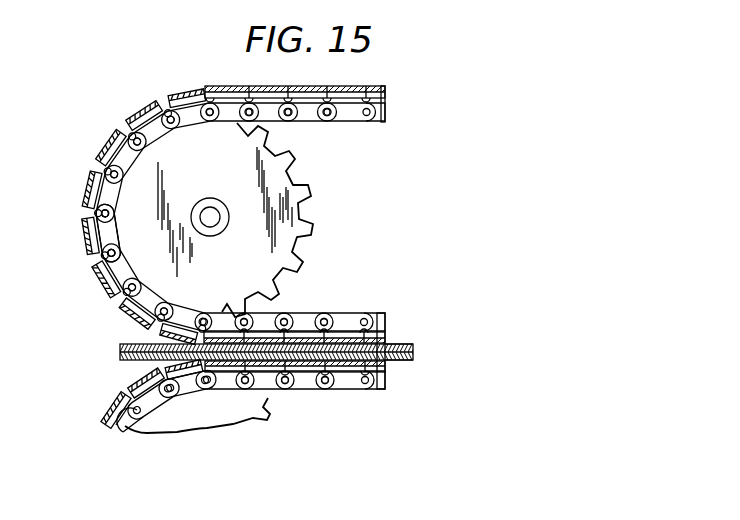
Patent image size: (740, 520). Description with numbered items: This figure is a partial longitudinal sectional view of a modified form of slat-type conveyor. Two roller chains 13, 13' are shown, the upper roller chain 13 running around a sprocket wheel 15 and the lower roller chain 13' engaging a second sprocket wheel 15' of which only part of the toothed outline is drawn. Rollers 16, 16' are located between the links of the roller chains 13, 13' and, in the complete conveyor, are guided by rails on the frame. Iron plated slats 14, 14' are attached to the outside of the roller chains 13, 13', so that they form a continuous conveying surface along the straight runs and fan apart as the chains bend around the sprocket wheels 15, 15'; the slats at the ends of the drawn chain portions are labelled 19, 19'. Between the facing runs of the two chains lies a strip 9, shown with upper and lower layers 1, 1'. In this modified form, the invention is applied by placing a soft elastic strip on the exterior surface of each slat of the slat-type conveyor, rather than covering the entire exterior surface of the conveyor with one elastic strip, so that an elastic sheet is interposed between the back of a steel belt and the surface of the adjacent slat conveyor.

The tape strip upper layer 1 is at (419, 330).
The tape strip lower layer 1' is at (421, 376).
The braided strip 9 is at (120, 350).
The roller chain 13 is at (76, 236).
The roller chain 13' is at (149, 425).
The iron plated slat 14 is at (110, 143).
The iron plated slat 14' is at (128, 380).
The sprocket wheel 15 is at (259, 220).
The sprocket wheel 15' is at (197, 436).
The roller 16 is at (239, 215).
The roller 16' is at (251, 413).
The end shoe 19 is at (177, 84).
The end shoe of lower chain 19' is at (88, 410).